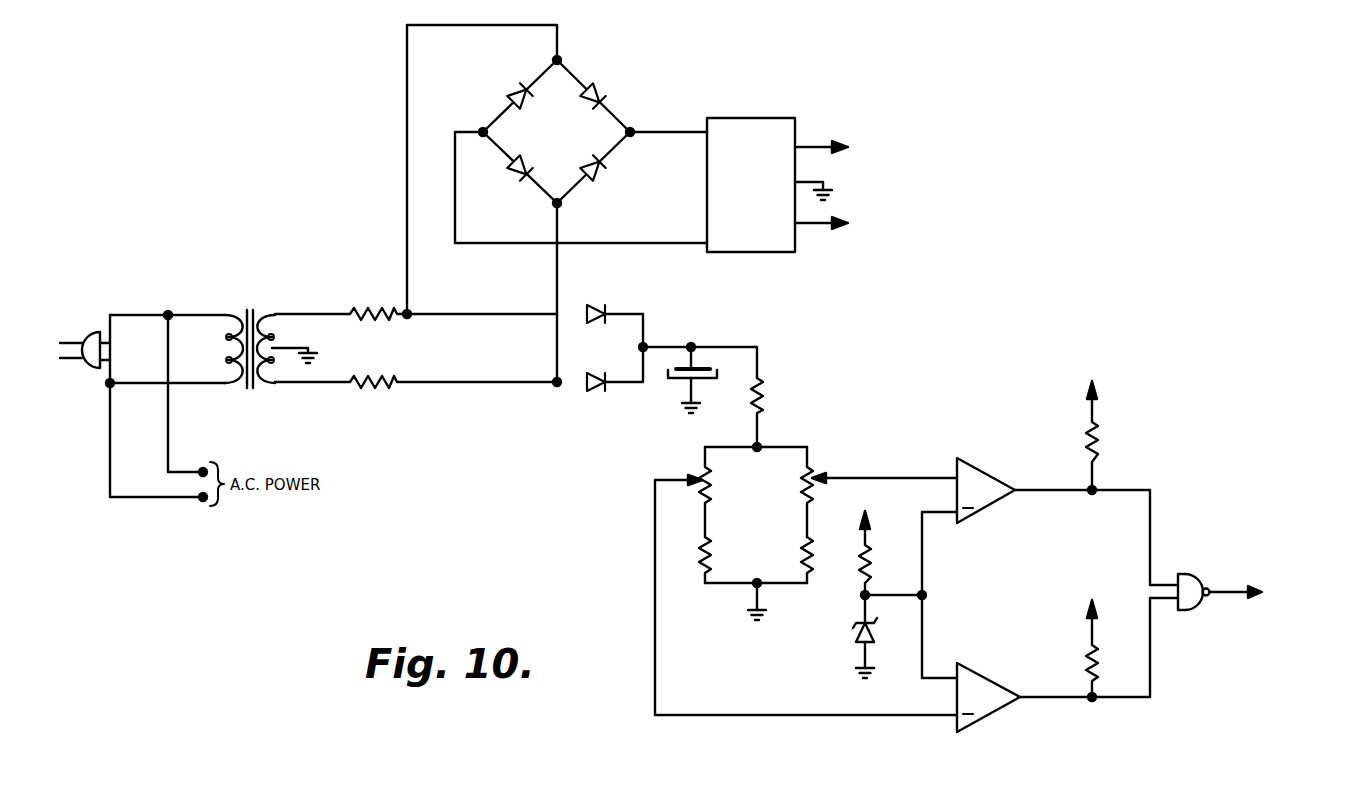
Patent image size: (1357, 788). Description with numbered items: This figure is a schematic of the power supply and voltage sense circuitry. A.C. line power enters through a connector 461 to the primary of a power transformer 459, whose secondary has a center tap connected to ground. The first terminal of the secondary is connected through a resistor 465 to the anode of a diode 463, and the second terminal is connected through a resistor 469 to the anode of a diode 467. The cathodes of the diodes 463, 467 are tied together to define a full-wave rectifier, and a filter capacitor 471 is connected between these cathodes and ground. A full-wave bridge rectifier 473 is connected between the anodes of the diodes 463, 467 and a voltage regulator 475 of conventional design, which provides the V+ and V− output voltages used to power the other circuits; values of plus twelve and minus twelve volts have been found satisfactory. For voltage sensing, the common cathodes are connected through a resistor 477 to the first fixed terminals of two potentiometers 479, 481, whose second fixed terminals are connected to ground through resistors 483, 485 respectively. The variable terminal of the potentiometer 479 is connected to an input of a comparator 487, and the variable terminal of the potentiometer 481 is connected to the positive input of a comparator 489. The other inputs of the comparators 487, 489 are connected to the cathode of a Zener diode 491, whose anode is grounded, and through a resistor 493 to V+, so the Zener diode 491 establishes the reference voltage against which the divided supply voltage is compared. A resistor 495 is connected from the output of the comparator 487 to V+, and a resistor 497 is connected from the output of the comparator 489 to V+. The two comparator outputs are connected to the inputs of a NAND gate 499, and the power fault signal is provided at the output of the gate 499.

The power transformer 459 is at (258, 310).
The connector 461 is at (78, 330).
The diode 463 is at (597, 305).
The resistor 465 is at (363, 308).
The diode 467 is at (593, 392).
The resistor 469 is at (378, 396).
The filter capacitor 471 is at (680, 380).
The full-wave bridge rectifier 473 is at (580, 140).
The voltage regulator 475 is at (745, 118).
The resistor 477 is at (762, 390).
The potentiometer 479 is at (703, 492).
The potentiometer 481 is at (820, 470).
The resistor 483 is at (703, 557).
The resistor 485 is at (806, 560).
The comparator 487 is at (980, 722).
The comparator 489 is at (975, 470).
The Zener diode 491 is at (850, 630).
The resistor 493 is at (868, 562).
The resistor 495 is at (1088, 655).
The resistor 497 is at (1098, 448).
The NAND gate 499 is at (1192, 578).